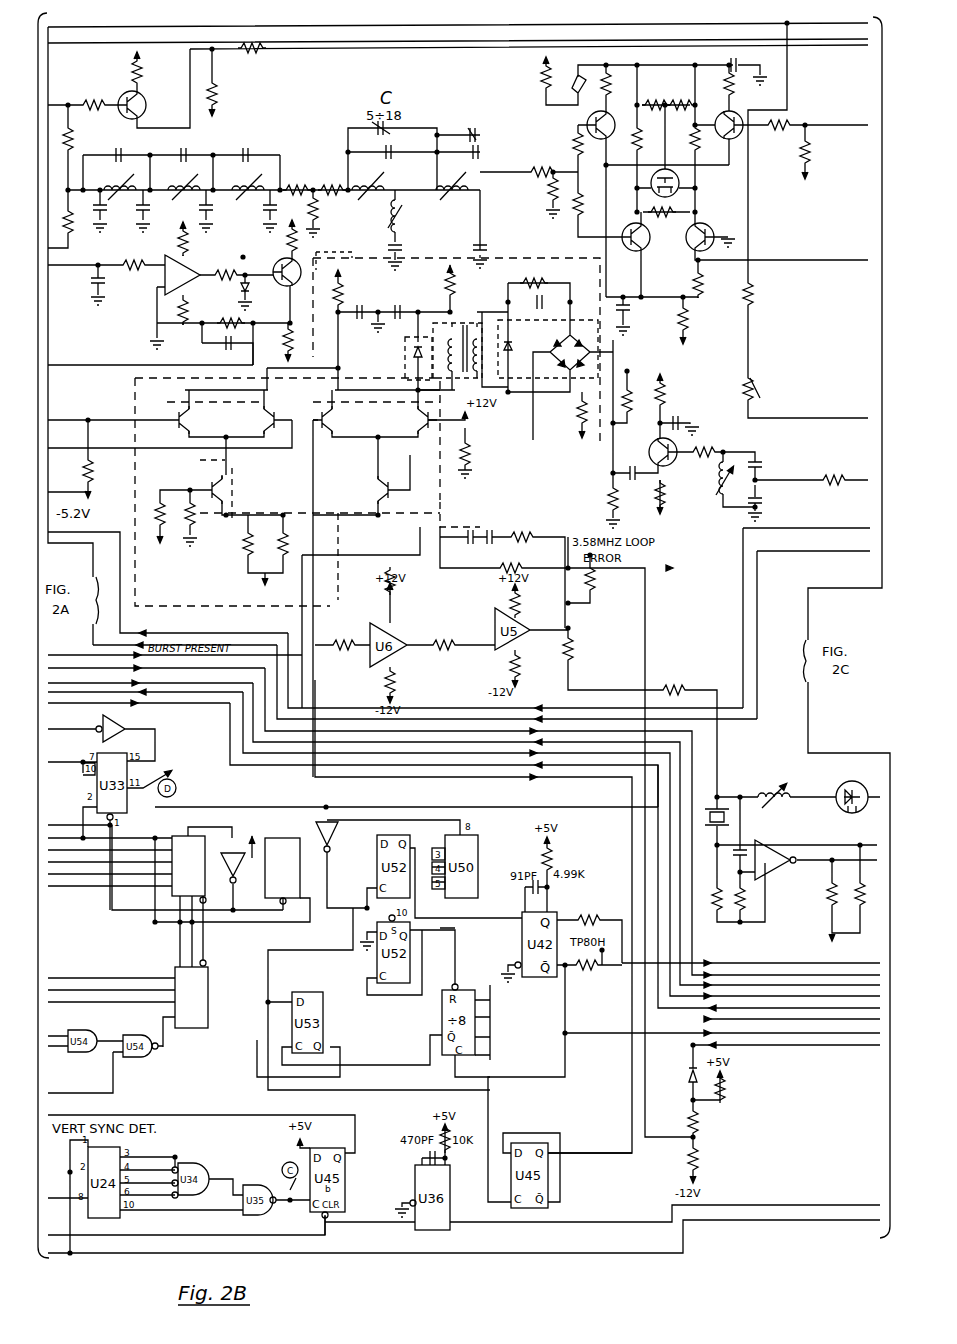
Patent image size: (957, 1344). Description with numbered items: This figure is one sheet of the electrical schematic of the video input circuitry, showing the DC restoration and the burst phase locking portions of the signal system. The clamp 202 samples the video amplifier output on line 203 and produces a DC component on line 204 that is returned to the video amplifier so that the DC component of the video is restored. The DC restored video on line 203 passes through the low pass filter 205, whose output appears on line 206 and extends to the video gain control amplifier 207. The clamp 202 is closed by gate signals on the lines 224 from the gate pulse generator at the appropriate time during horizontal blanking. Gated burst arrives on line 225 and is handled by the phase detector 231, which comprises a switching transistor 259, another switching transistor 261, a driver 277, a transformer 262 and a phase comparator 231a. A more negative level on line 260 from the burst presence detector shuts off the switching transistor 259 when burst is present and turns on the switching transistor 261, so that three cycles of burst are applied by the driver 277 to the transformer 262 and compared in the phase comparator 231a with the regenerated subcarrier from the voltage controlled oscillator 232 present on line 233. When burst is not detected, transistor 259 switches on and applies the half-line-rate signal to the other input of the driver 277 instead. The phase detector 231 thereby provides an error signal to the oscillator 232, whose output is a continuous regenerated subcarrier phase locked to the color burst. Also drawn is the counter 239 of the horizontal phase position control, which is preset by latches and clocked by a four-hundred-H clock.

The clamp 202 is at (155, 281).
The line 203 is at (76, 267).
The line 204 is at (118, 368).
The low pass filter 205 is at (156, 146).
The line 206 is at (566, 168).
The video gain control amplifier 207 is at (800, 106).
The lines 224 is at (70, 362).
The line 225 is at (466, 694).
The phase detector 231 is at (510, 255).
The phase comparator 231a is at (584, 325).
The voltage controlled oscillator 232 is at (812, 782).
The line 233 is at (612, 437).
The counter 239 is at (170, 960).
The switching transistor 259 is at (396, 480).
The line 260 is at (346, 570).
The switching transistor 261 is at (228, 504).
The transformer 262 is at (482, 298).
The driver 277 is at (355, 380).